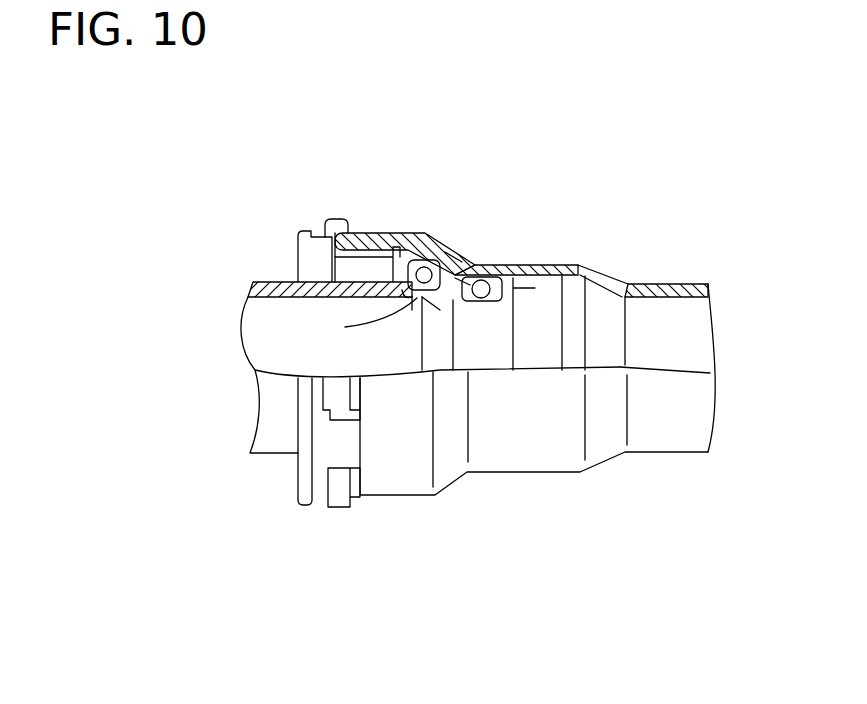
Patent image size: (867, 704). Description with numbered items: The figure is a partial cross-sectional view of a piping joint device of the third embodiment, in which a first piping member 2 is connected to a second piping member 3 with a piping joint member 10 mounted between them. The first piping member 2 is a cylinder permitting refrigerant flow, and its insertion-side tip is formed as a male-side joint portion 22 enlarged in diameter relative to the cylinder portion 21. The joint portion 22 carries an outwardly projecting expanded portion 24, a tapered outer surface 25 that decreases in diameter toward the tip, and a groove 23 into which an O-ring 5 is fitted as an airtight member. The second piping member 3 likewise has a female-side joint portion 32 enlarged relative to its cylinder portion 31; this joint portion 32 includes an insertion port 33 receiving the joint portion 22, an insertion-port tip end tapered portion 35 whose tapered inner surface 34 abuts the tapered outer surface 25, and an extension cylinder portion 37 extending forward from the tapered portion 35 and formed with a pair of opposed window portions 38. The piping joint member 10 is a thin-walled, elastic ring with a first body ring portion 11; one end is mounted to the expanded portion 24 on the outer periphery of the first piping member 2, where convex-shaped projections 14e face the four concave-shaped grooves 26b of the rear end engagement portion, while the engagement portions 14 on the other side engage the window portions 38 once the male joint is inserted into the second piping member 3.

The first piping member 2 is at (214, 260).
The cylinder portion 21 is at (250, 280).
The male-side joint portion 22 is at (526, 298).
The groove 23 is at (480, 297).
The tapered outer surface 25 is at (432, 300).
The second piping member 3 is at (670, 275).
The cylinder portion 31 is at (692, 282).
The female-side joint portion 32 is at (524, 257).
The insertion port 33 is at (576, 264).
The tapered inner surface 34 is at (468, 272).
The insertion-port tip end tapered portion 35 is at (447, 250).
The O-ring 5 is at (500, 300).
The piping joint member 10 is at (336, 213).
The first body ring portion 11 is at (392, 255).
The engagement portion 14 is at (333, 230).
The convex-shaped projection 14e is at (345, 327).
The expanded portion 24 is at (413, 252).
The concave-shaped groove 26b is at (409, 258).
The extension cylinder portion 37 is at (300, 230).
The window portion 38 is at (362, 245).